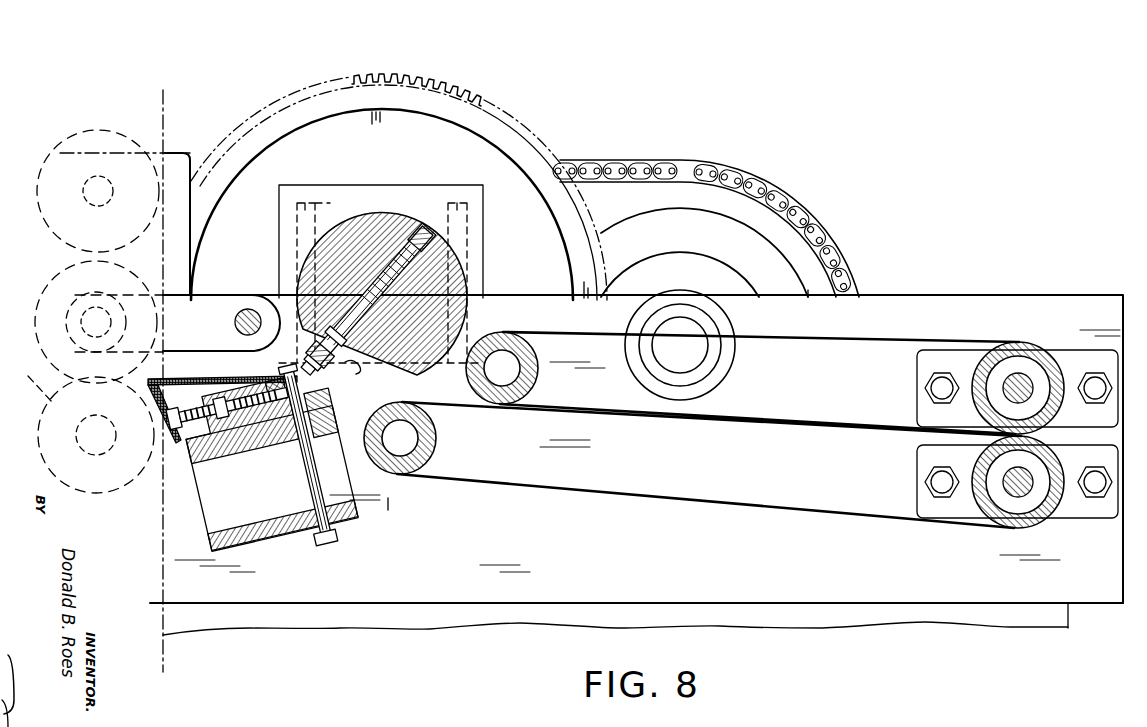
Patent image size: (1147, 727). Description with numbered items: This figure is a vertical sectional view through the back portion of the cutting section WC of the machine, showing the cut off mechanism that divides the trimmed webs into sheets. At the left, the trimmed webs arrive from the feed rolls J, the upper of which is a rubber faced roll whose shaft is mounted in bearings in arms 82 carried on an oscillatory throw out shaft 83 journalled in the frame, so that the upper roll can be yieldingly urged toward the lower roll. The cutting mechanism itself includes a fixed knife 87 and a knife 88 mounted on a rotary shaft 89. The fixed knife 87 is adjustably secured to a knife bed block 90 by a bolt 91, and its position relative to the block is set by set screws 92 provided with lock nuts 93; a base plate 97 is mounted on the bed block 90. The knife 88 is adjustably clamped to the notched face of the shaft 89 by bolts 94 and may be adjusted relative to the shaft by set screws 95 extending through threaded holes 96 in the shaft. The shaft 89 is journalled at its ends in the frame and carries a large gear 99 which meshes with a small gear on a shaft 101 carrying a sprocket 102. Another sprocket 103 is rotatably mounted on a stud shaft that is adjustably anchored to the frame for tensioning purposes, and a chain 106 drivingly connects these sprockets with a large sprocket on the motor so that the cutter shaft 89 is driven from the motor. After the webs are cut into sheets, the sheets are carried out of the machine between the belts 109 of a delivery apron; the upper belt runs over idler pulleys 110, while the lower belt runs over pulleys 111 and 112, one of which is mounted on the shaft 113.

The arms 82 is at (205, 299).
The oscillatory throw out shaft 83 is at (250, 308).
The fixed knife 87 is at (326, 400).
The knife 88 is at (314, 356).
The rotary shaft 89 is at (468, 297).
The knife bed block 90 is at (248, 440).
The bolt 91 is at (310, 493).
The set screws 92 is at (190, 432).
The lock nuts 93 is at (212, 396).
The bolts 94 is at (359, 372).
The set screws 95 is at (418, 231).
The threaded holes 96 is at (430, 236).
The base plate 97 is at (215, 381).
The large gear 99 is at (456, 92).
The shaft 101 is at (690, 349).
The sprocket 102 is at (790, 246).
The sprocket 103 is at (102, 130).
The chain 106 is at (597, 164).
The belts 109 is at (836, 336).
The idler pulleys 110 is at (538, 381).
The pulley 111 is at (977, 456).
The pulley 112 is at (432, 441).
The shaft 113 is at (1028, 478).
The cutting section WC is at (910, 300).
The feed rolls J is at (28, 389).